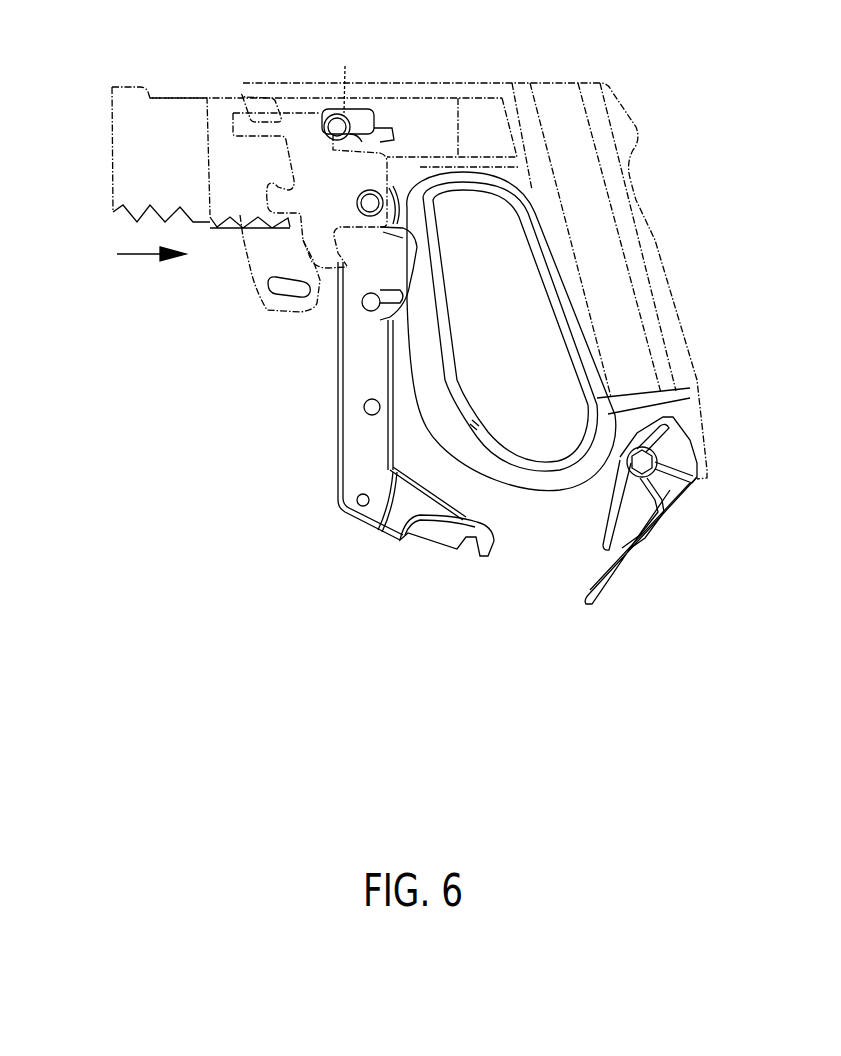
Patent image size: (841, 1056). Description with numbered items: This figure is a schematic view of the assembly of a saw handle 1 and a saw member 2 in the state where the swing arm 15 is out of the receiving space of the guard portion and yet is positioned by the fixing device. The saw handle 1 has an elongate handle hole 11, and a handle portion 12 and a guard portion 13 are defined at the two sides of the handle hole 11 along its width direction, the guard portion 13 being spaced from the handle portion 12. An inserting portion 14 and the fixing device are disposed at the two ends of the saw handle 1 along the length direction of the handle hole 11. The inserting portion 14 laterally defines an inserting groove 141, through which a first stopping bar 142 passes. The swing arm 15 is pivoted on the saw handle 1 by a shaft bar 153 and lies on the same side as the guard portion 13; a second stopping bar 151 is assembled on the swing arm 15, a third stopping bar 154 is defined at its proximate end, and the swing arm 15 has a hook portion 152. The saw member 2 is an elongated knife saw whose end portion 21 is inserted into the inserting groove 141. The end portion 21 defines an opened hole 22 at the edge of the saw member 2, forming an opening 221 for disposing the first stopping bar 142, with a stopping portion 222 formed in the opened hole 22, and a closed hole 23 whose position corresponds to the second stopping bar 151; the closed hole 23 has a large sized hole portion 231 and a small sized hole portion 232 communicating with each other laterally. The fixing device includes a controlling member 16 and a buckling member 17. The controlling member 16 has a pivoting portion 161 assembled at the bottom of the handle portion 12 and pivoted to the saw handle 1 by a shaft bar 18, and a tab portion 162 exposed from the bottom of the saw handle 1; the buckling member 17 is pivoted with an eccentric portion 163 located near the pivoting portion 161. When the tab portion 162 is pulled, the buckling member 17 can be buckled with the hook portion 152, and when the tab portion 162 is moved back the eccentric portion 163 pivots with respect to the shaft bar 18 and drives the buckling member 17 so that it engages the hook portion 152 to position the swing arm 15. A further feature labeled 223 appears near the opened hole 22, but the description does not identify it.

The saw handle 1 is at (642, 107).
The saw member 2 is at (213, 177).
The handle hole 11 is at (485, 213).
The handle portion 12 is at (668, 241).
The guard portion 13 is at (428, 370).
The inserting portion 14 is at (258, 92).
The swing arm 15 is at (335, 383).
The controlling member 16 is at (653, 562).
The buckling member 17 is at (603, 532).
The shaft bar 18 is at (680, 487).
The end portion 21 is at (212, 84).
The opened hole 22 is at (386, 123).
The closed hole 23 is at (468, 240).
The inserting groove 141 is at (447, 103).
The first stopping bar 142 is at (330, 120).
The second stopping bar 151 is at (365, 312).
The hook portion 152 is at (462, 552).
The shaft bar 153 is at (356, 203).
The third stopping bar 154 is at (363, 508).
The pivoting portion 161 is at (635, 493).
The tab portion 162 is at (612, 587).
The eccentric portion 163 is at (677, 433).
The opening 221 is at (390, 133).
The stopping portion 222 is at (351, 77).
The stop lug 223 is at (357, 138).
The large sized hole portion 231 is at (387, 277).
The small sized hole portion 232 is at (403, 295).